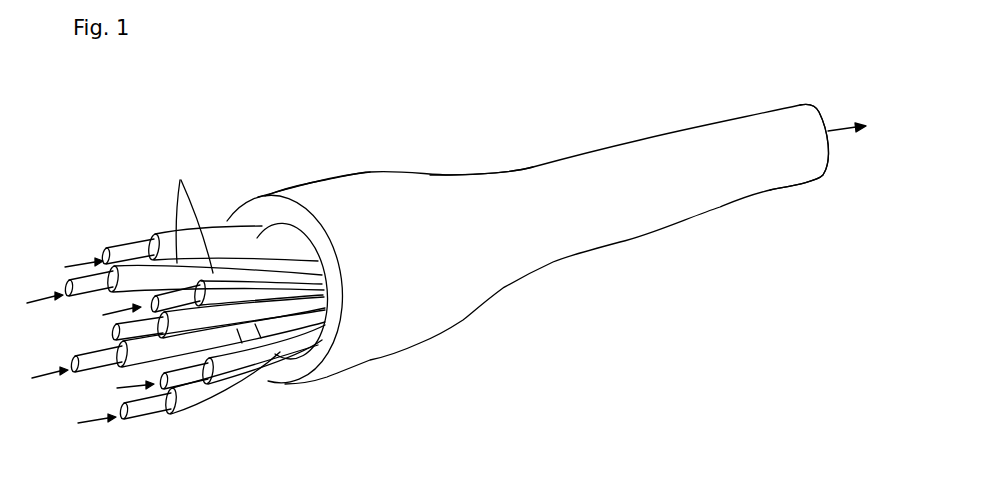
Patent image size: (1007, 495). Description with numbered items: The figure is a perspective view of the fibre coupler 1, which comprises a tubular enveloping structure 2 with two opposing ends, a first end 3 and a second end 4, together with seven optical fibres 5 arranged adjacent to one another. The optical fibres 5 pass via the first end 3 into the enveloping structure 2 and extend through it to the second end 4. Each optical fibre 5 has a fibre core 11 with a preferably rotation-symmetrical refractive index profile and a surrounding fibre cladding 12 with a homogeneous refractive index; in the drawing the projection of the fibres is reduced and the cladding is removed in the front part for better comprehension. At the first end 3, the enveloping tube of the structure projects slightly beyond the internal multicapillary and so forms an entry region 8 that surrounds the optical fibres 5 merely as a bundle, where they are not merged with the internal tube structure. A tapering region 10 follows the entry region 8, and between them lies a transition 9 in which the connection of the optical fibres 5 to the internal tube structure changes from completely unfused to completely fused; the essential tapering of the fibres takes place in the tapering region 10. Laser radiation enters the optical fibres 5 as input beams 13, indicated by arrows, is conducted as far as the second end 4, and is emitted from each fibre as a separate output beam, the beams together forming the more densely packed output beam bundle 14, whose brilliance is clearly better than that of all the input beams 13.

The fibre coupler 1 is at (536, 216).
The tubular enveloping structure 2 is at (576, 139).
The first end 3 is at (258, 212).
The second end 4 is at (817, 111).
The optical fibres 5 is at (189, 214).
The entry region 8 is at (291, 192).
The transition 9 is at (330, 182).
The tapering region 10 is at (452, 175).
The fibre core 11 is at (102, 248).
The fibre cladding 12 is at (147, 240).
The input beams 13 is at (82, 262).
The output beam bundle 14 is at (843, 127).